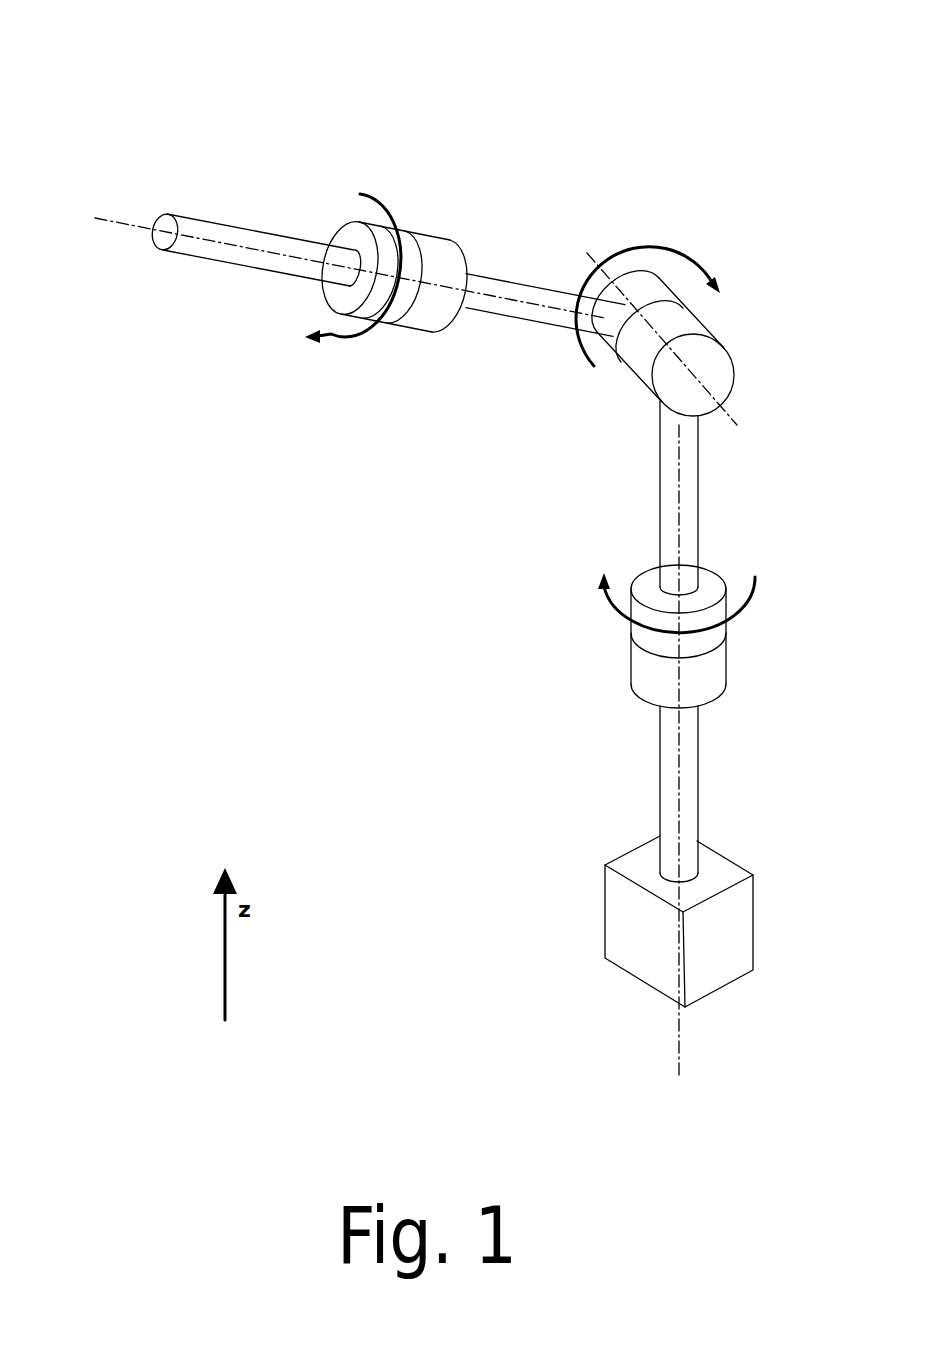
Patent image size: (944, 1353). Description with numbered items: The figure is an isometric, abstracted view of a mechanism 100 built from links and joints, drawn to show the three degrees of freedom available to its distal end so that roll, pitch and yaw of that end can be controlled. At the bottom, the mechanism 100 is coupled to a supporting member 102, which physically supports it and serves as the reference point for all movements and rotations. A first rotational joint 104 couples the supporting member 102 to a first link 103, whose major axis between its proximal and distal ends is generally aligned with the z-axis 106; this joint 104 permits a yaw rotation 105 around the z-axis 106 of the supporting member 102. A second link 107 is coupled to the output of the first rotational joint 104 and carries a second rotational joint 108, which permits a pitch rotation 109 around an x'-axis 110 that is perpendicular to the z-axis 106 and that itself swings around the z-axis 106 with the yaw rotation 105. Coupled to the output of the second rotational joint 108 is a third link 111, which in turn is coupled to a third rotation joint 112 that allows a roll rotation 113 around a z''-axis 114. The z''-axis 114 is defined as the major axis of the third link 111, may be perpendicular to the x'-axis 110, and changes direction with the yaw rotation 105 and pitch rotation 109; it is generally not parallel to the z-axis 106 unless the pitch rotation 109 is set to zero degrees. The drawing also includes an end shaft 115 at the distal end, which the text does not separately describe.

The mechanism 100 is at (102, 53).
The supporting member 102 is at (640, 916).
The first link 103 is at (640, 793).
The first rotational joint 104 is at (722, 636).
The yaw rotation 105 is at (718, 594).
The z-axis 106 is at (627, 765).
The second link 107 is at (727, 498).
The second rotational joint 108 is at (704, 343).
The pitch rotation 109 is at (648, 274).
The x'-axis 110 is at (702, 326).
The third link 111 is at (545, 273).
The third rotation joint 112 is at (391, 247).
The roll rotation 113 is at (340, 304).
The z''-axis 114 is at (332, 259).
The end shaft / tool holder 115 is at (254, 278).